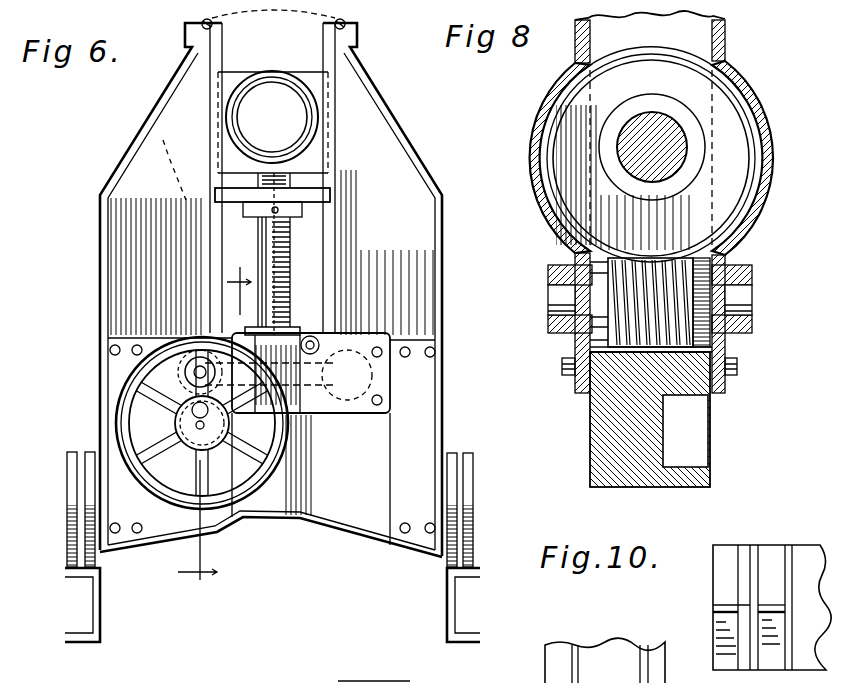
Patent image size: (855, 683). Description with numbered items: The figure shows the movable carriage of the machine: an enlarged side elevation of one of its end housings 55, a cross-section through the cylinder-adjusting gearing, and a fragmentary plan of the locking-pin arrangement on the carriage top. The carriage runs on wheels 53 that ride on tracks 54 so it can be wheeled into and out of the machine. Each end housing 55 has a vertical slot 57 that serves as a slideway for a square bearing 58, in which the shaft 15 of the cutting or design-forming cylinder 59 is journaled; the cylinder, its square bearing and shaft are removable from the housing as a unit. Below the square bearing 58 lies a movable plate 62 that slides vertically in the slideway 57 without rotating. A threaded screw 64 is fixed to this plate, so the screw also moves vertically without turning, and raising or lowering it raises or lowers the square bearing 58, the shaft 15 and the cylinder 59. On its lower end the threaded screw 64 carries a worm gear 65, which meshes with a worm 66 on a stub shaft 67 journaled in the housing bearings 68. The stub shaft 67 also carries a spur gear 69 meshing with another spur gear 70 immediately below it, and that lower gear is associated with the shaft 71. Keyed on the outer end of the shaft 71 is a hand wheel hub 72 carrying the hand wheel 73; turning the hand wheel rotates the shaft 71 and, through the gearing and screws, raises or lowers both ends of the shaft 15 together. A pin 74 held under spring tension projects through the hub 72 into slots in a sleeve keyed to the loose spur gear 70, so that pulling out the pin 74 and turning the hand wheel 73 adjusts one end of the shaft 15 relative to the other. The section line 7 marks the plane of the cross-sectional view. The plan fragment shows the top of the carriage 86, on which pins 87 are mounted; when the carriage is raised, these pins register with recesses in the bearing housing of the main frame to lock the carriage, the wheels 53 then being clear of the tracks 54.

In FIG. 6, the section line 7 is at (214, 425).
In FIG. 6, the shaft 15 is at (272, 117).
In FIG. 6, the wheels 53 is at (67, 484).
In FIG. 6, the tracks 54 is at (100, 604).
In FIG. 6, the end housings 55 is at (415, 255).
In FIG. 6, the vertical slot 57 is at (297, 285).
In FIG. 6, the square bearings 58 is at (310, 76).
In FIG. 6, the cutting or design-forming cylinder 59 is at (181, 163).
In FIG. 6, the movable plate 62 is at (330, 195).
In FIG. 6, the threaded screw 64 is at (265, 228).
In FIG. 8, the threaded screw 64 is at (680, 140).
In FIG. 6, the worm gear 65 is at (262, 210).
In FIG. 8, the worm gear 65 is at (740, 162).
In FIG. 8, the worm 66 is at (625, 340).
In FIG. 6, the stub shaft 67 is at (205, 386).
In FIG. 8, the stub shaft 67 is at (750, 300).
In FIG. 6, the housing bearings 68 is at (311, 373).
In FIG. 8, the housing bearings 68 is at (768, 190).
In FIG. 6, the spur gear 69 is at (185, 373).
In FIG. 8, the spur gear 69 is at (690, 400).
In FIG. 6, the spur gear 70 is at (200, 432).
In FIG. 6, the shaft 71 is at (215, 428).
In FIG. 6, the hand wheel hub 72 is at (220, 447).
In FIG. 6, the hand wheel 73 is at (218, 527).
In FIG. 6, the pin 74 is at (145, 474).
In FIG. 6, the pins 87 is at (202, 22).
In FIG. 10, the pins 87 is at (745, 556).
In FIG. 10, the top of the carriage 86 is at (770, 560).